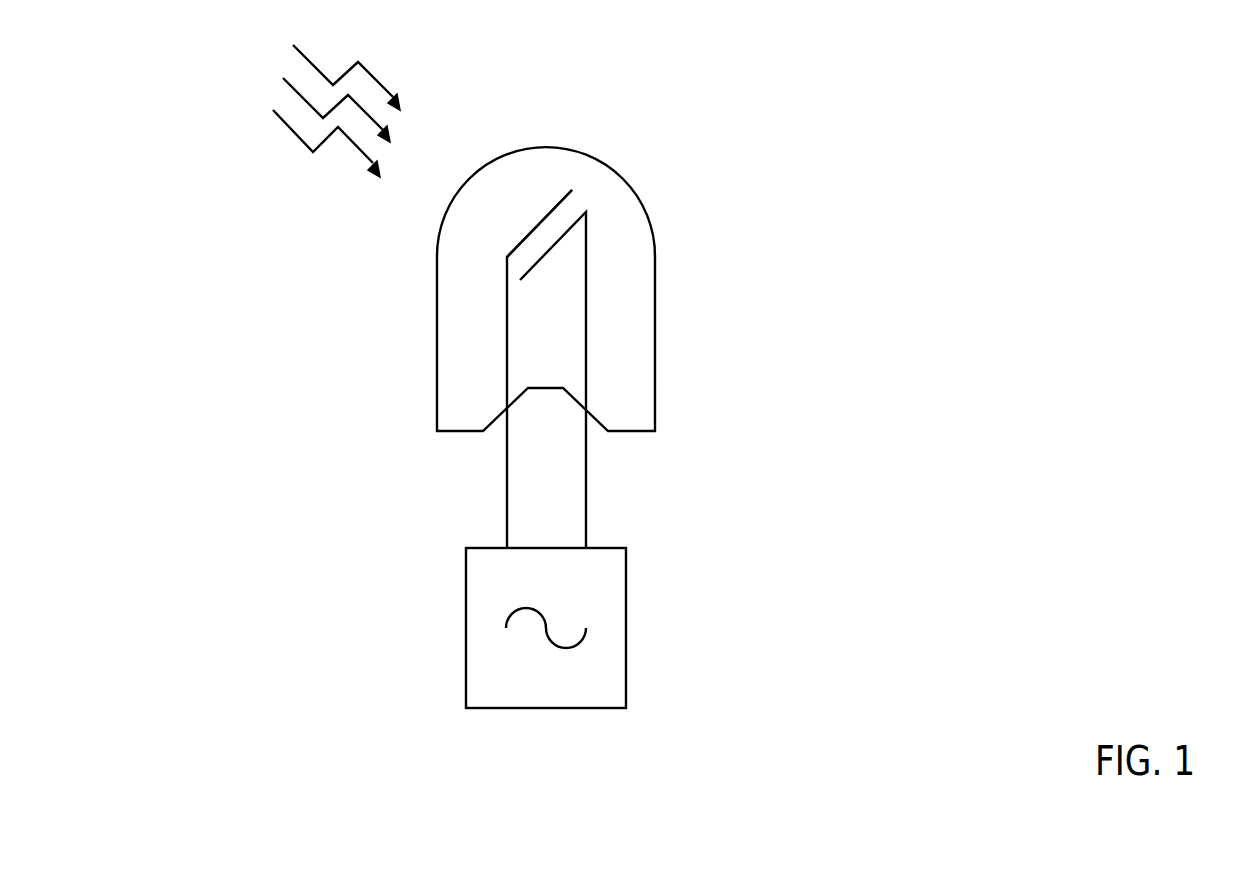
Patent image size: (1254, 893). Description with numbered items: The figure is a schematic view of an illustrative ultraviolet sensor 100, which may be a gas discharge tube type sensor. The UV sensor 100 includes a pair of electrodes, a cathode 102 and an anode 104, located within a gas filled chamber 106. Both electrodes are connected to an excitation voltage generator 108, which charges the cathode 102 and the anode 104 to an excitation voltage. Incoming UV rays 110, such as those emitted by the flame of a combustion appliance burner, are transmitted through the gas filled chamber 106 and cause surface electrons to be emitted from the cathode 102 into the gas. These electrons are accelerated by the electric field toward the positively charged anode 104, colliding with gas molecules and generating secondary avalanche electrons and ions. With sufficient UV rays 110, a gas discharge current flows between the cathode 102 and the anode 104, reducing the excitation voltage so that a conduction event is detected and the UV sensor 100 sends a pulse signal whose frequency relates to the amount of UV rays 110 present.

The ultraviolet (UV) sensor 100 is at (655, 122).
The cathode 102 is at (536, 223).
The anode 104 is at (555, 248).
The gas filled chamber 106 is at (633, 227).
The excitation voltage generator 108 is at (627, 574).
The UV rays 110 is at (292, 133).